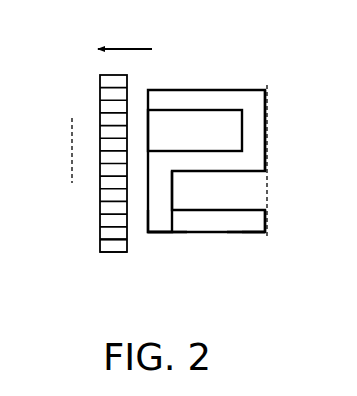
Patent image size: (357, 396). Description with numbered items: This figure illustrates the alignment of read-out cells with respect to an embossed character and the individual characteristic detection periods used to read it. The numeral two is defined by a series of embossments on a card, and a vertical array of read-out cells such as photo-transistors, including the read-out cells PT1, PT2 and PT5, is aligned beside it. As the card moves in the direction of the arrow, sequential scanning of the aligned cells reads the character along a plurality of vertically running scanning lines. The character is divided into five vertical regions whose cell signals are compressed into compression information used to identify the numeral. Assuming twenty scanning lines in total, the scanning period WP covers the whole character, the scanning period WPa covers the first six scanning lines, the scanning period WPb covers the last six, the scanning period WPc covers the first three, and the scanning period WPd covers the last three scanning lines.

The read-out cell PT5 is at (92, 160).
The read-out cell PT2 is at (95, 232).
The read-out cell PT1 is at (94, 251).
The scanning period for the whole of the character WP is at (265, 90).
The scanning period for the first six scanning lines WPa is at (186, 237).
The scanning period for the last six scanning lines WPb is at (264, 237).
The scanning period for the first three scanning lines WPc is at (148, 232).
The scanning period for the last three scanning lines WPd is at (264, 265).